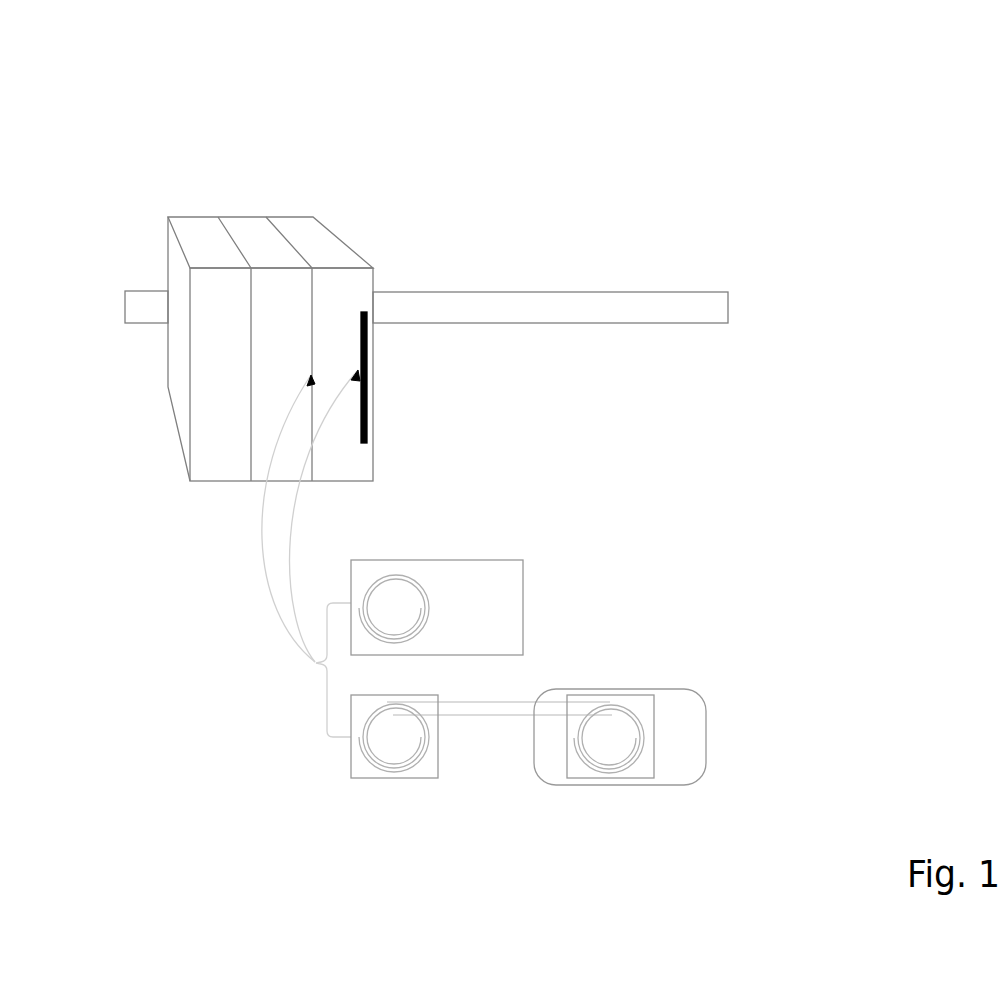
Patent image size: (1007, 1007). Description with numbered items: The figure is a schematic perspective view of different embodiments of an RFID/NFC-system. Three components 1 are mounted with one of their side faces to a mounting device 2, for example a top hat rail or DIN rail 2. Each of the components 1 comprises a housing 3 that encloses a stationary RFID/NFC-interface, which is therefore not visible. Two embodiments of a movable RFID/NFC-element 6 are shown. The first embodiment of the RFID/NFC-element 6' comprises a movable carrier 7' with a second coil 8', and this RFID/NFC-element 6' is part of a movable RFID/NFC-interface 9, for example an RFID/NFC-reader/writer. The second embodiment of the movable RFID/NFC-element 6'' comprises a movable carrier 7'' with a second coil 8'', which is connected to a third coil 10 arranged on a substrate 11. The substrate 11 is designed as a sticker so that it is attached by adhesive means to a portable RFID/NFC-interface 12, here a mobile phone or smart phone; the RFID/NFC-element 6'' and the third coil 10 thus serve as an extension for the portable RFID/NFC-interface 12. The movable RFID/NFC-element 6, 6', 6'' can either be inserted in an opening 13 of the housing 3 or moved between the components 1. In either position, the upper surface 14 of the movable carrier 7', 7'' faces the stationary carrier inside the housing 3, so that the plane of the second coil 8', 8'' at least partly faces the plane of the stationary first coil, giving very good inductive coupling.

The component 1 is at (502, 101).
The mounting device 2 is at (720, 293).
The housing 3 is at (168, 228).
The movable RFID/NFC-element 6 is at (505, 624).
The movable RFID/NFC-interface 9 is at (505, 624).
The RFID/NFC-element 6' is at (369, 606).
The movable RFID/NFC-element 6'' is at (346, 786).
The movable carrier 7' is at (442, 570).
The movable carrier 7'' is at (371, 786).
The second coil 8' is at (409, 564).
The second coil 8'' is at (414, 791).
The third coil 10 is at (632, 713).
The substrate 11 is at (643, 770).
The portable RFID/NFC-interface 12 is at (700, 717).
The opening 13 is at (367, 338).
The upper surface 14 is at (500, 615).